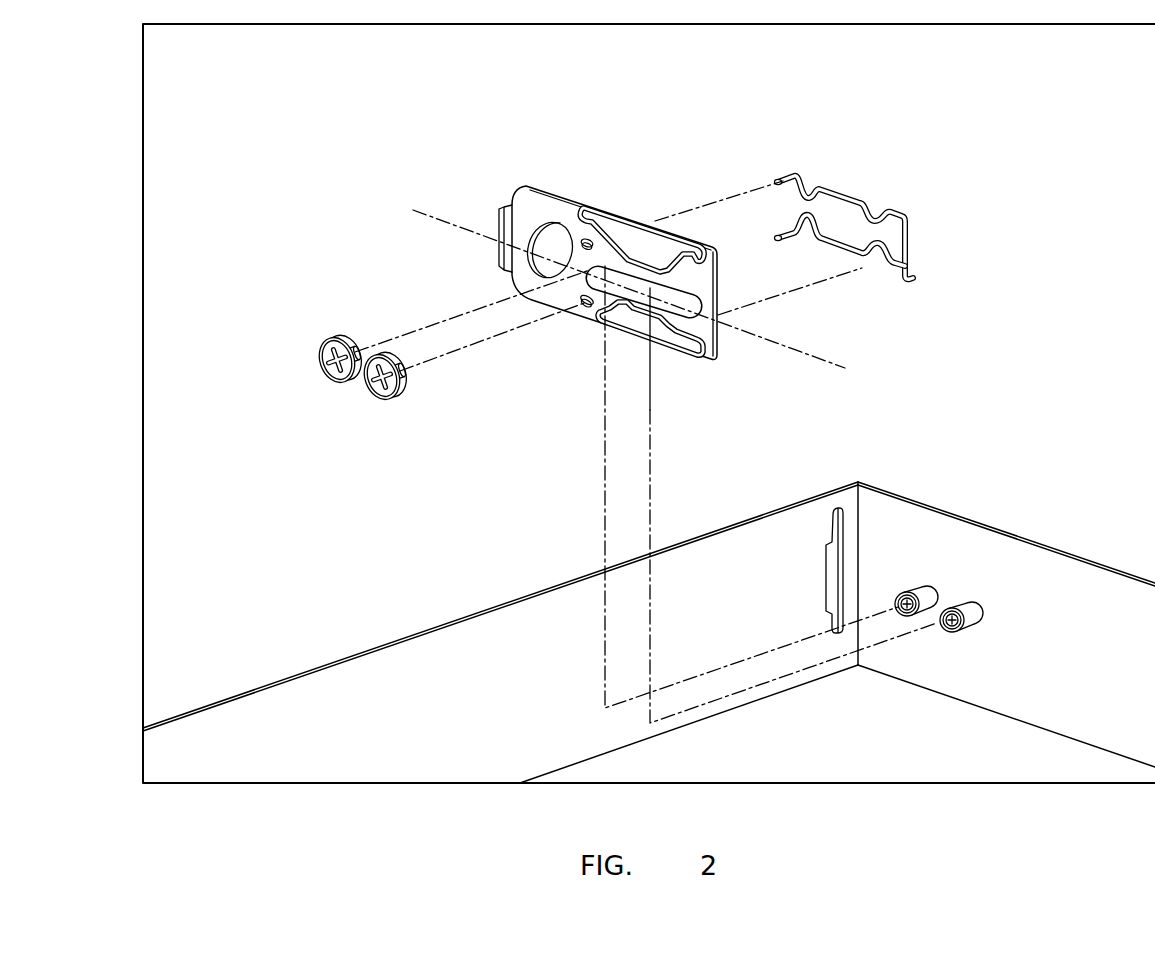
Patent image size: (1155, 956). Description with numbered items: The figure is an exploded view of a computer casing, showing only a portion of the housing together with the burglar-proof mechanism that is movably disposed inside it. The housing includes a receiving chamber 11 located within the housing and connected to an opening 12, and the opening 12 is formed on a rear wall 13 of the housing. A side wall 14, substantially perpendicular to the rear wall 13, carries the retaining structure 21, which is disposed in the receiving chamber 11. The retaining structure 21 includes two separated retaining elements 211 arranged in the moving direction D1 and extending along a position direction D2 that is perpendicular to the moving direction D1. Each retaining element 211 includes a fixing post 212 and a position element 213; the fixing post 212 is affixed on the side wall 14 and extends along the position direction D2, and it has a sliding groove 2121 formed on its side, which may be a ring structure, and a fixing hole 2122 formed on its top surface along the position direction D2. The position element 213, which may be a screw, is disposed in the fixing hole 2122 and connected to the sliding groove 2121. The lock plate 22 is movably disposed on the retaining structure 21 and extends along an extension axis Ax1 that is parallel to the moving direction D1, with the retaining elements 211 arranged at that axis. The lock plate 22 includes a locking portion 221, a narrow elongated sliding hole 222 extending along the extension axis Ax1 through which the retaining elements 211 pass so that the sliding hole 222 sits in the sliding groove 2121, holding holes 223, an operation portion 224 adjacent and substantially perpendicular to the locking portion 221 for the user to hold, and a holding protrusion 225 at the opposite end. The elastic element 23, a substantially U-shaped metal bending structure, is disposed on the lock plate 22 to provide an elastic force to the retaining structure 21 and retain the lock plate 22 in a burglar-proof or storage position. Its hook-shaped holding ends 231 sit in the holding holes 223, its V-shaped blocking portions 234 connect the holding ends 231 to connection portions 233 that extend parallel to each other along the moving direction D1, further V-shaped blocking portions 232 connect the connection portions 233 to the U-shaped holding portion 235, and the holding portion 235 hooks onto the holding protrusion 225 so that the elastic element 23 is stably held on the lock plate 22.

The receiving chamber 11 is at (875, 742).
The opening 12 is at (838, 507).
The rear wall 13 is at (510, 637).
The side wall 14 is at (1108, 602).
The retaining structure 21 is at (241, 82).
The retaining element 211 is at (290, 45).
The fixing post 212 is at (715, 340).
The sliding groove 2121 is at (927, 590).
The fixing hole 2122 is at (905, 592).
The position element 213 is at (333, 440).
The lock plate 22 is at (619, 269).
The locking portion 221 is at (548, 220).
The sliding hole 222 is at (683, 322).
The holding hole 223 is at (592, 238).
The operation portion 224 is at (500, 220).
The holding protrusion 225 is at (721, 330).
The elastic element 23 is at (866, 183).
The holding end 231 is at (783, 178).
The blocking portion 232 is at (880, 210).
The connection portion 233 is at (838, 192).
The blocking portion 234 is at (803, 188).
The holding portion 235 is at (905, 242).
The extension axis Ax1 is at (597, 275).
The moving direction D1 is at (947, 311).
The position direction D2 is at (1065, 352).